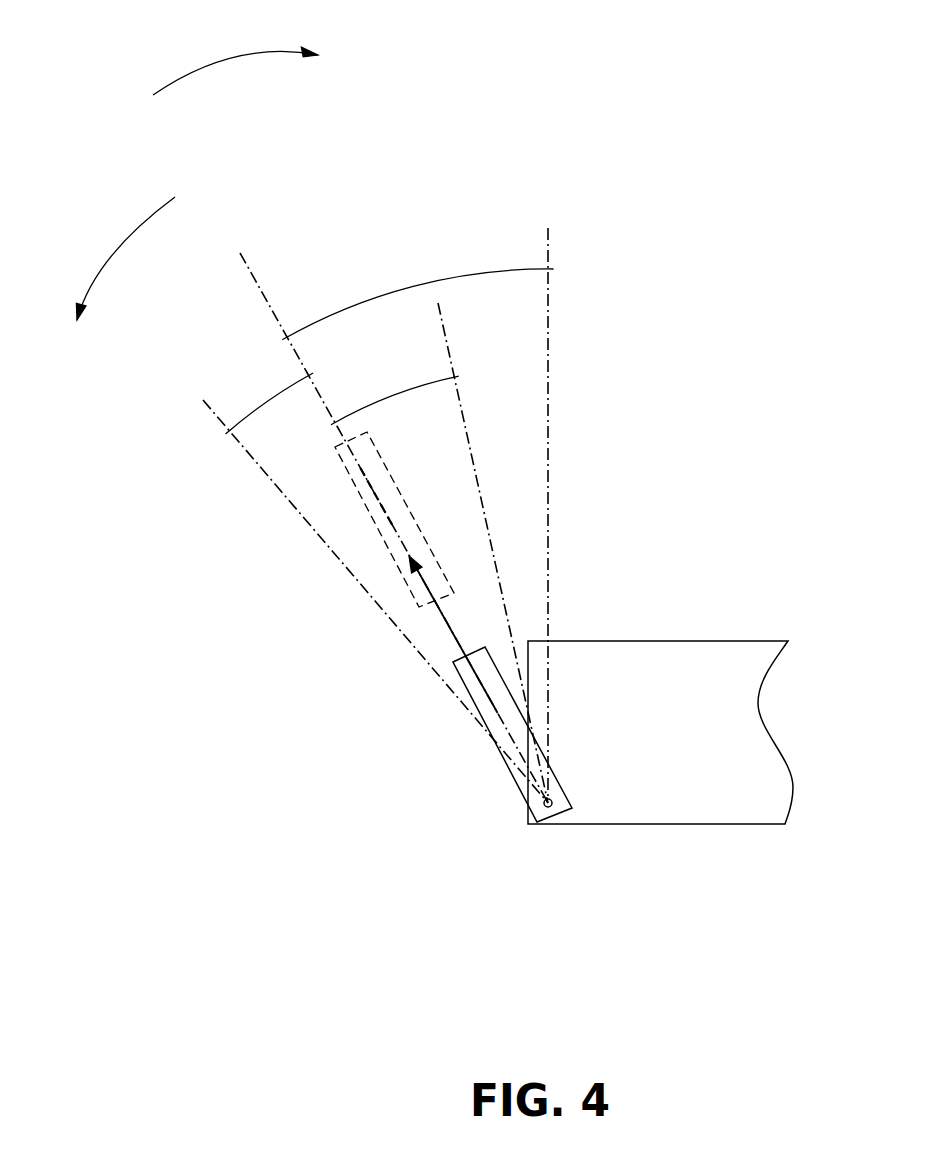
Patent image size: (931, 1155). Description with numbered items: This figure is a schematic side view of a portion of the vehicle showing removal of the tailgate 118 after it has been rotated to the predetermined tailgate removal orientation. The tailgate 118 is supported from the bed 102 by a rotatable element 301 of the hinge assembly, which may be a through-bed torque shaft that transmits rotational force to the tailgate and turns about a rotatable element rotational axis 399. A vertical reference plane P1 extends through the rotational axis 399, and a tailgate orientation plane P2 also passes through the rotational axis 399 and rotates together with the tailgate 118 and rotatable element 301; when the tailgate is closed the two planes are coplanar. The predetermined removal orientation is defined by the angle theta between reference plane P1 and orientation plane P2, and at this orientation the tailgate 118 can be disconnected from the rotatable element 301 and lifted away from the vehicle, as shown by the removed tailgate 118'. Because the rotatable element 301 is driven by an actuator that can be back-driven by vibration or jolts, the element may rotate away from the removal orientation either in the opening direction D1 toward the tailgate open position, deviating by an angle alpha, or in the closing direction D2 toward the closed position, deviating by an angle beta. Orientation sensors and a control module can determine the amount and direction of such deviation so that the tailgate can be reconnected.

The bed 102 is at (702, 768).
The tailgate 118 is at (468, 762).
The removed tailgate 118' is at (333, 519).
The rotatable element 301 is at (547, 820).
The rotatable element rotational axis 399 is at (553, 808).
The vertical reference plane P1 is at (550, 427).
The tailgate orientation plane P2 is at (242, 267).
The opening direction D1 is at (125, 258).
The closing direction D2 is at (235, 60).